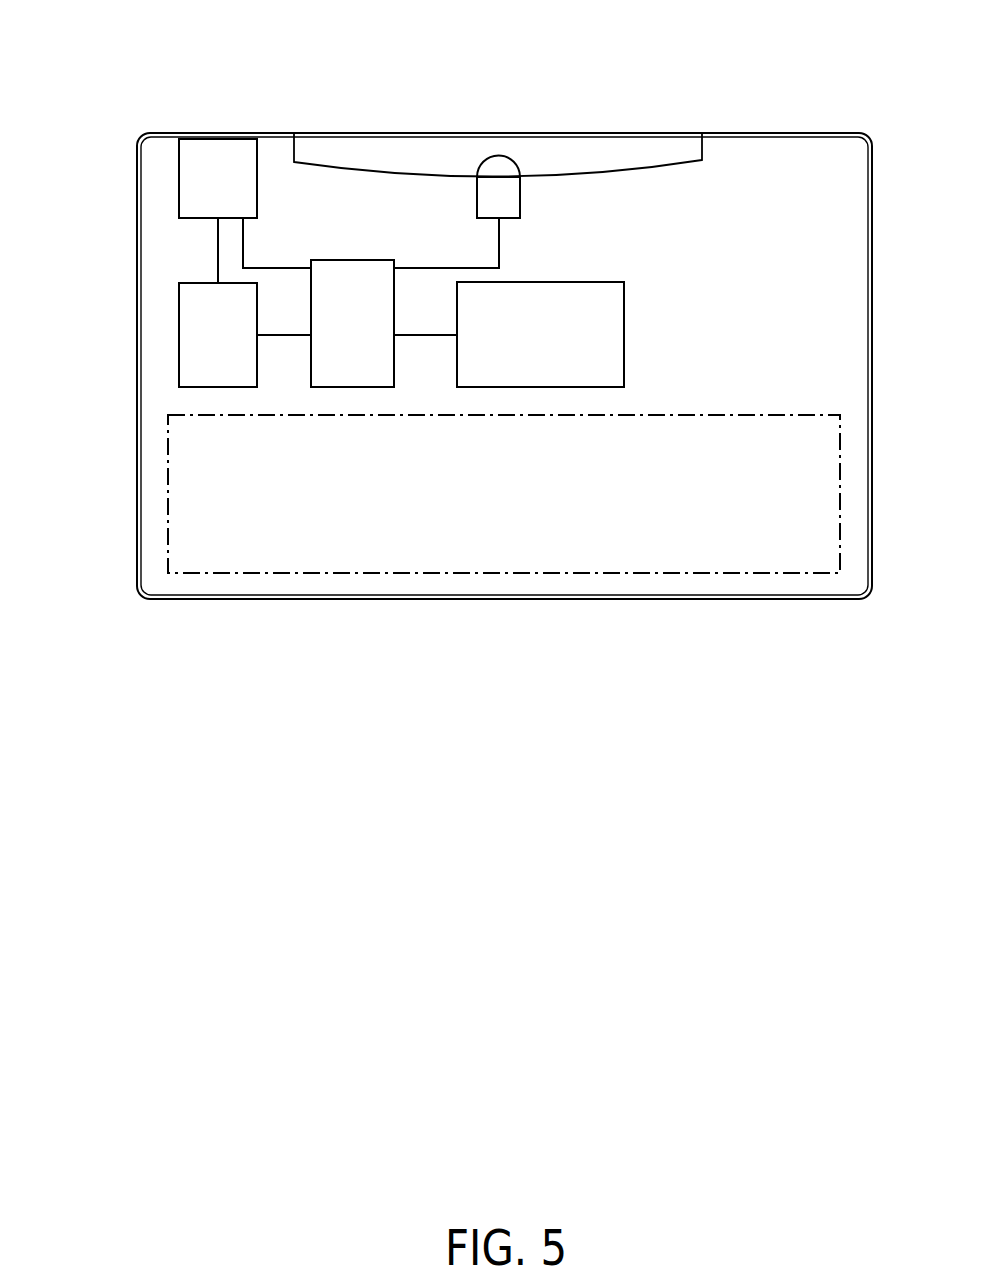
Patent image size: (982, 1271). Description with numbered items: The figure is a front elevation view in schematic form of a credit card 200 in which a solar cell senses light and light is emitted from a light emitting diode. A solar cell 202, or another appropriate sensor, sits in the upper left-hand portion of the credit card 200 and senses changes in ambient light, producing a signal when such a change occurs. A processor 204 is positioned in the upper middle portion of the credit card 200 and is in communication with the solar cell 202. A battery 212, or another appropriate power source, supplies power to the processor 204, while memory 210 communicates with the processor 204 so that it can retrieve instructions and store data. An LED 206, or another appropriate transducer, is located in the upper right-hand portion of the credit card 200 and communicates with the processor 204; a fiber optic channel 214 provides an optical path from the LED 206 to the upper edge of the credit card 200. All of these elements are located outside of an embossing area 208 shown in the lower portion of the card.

The credit card 200 is at (521, 64).
The solar cell 202 is at (178, 177).
The processor 204 is at (353, 259).
The LED 206 is at (521, 197).
The embossing area 208 is at (733, 415).
The memory 210 is at (624, 335).
The battery 212 is at (178, 335).
The fiber optic channel 214 is at (703, 152).